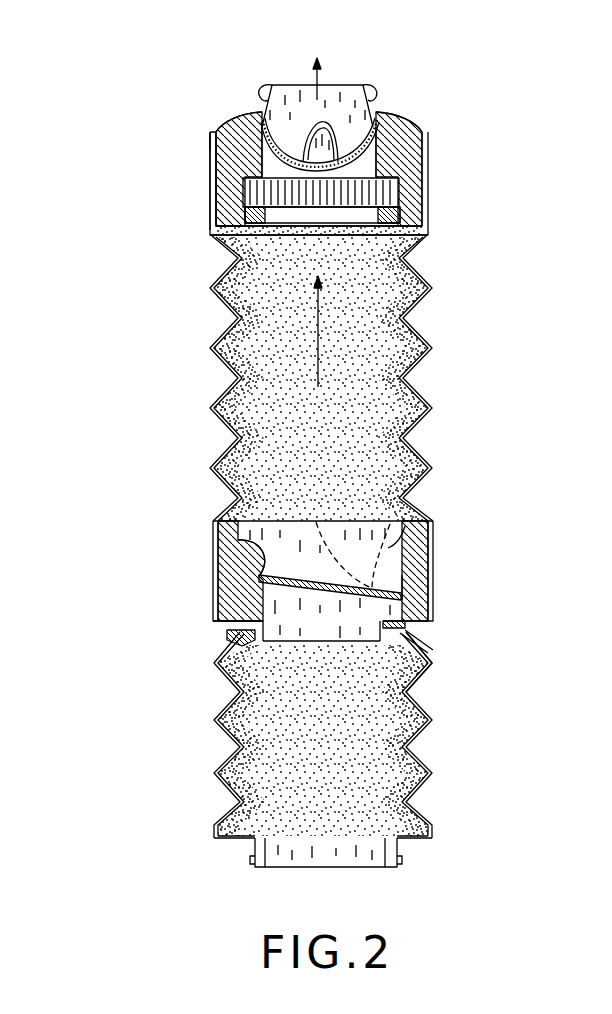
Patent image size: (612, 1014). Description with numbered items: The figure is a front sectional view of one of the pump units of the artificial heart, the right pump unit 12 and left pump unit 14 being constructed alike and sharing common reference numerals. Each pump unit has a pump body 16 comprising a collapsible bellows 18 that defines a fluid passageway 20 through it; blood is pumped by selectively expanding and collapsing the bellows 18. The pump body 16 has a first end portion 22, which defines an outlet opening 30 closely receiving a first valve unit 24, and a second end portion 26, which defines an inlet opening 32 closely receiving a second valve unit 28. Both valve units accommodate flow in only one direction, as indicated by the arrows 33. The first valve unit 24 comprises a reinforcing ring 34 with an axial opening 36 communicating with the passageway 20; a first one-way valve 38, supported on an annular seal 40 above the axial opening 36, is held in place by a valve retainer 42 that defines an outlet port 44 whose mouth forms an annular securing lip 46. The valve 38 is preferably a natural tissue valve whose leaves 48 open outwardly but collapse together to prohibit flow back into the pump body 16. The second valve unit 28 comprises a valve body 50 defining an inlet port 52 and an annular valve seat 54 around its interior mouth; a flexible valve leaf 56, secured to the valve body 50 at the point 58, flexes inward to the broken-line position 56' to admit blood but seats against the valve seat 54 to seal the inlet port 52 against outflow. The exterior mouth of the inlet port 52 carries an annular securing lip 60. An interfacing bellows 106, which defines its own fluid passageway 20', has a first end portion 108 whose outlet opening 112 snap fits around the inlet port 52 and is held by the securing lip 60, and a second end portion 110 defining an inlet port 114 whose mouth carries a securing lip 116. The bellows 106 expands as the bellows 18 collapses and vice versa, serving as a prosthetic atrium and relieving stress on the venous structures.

The right pump unit 12 is at (495, 244).
The left pump unit 14 is at (495, 244).
The pump body 16 is at (422, 388).
The collapsible bellows 18 is at (220, 372).
The fluid passageway 20 is at (321, 379).
The fluid passageway 20' is at (323, 740).
The first end portion 22 is at (428, 181).
The first valve unit 24 is at (388, 110).
The second end portion 26 is at (433, 565).
The second valve unit 28 is at (385, 625).
The outlet opening 30 is at (213, 131).
The inlet opening 32 is at (240, 623).
The arrows 33 is at (305, 82).
The reinforcing ring 34 is at (220, 153).
The axial opening 36 is at (214, 236).
The first one-way valve 38 is at (267, 166).
The annular seal 40 is at (247, 213).
The valve retainer 42 is at (407, 150).
The outlet port 44 is at (270, 85).
The annular securing lip 46 is at (380, 94).
The leaves 48 is at (335, 128).
The valve body 50 is at (237, 600).
The inlet port 52 is at (245, 682).
The annular valve seat 54 is at (253, 580).
The flexible valve leaf 56 is at (214, 547).
The flexed valve leaf position 56' is at (431, 532).
The leaf securing point 58 is at (403, 588).
The annular securing lip 60 is at (290, 644).
The interfacing bellows 106 is at (424, 753).
The first end portion 108 is at (427, 666).
The second end portion 110 is at (232, 838).
The outlet opening 112 is at (426, 629).
The inlet port 114 is at (290, 868).
The securing lip 116 is at (252, 862).